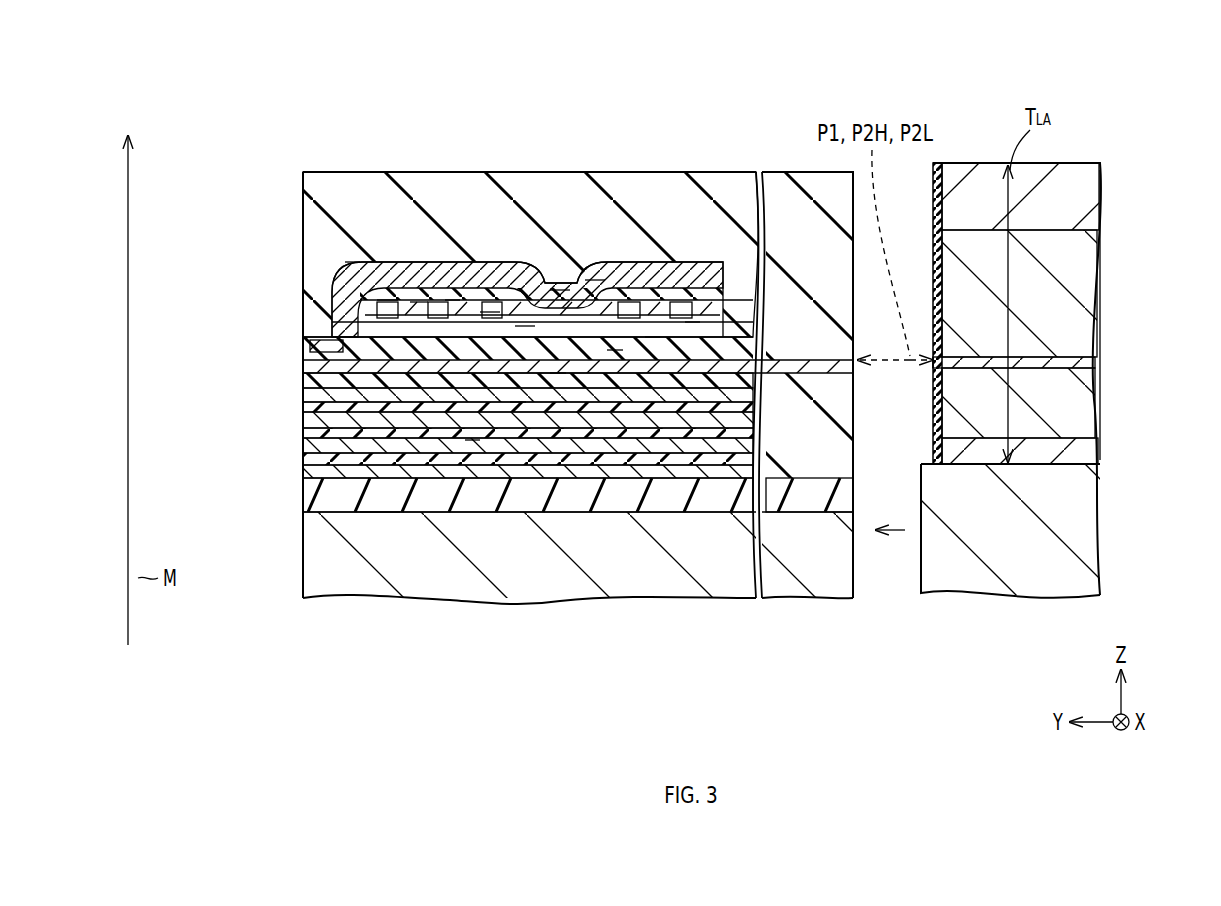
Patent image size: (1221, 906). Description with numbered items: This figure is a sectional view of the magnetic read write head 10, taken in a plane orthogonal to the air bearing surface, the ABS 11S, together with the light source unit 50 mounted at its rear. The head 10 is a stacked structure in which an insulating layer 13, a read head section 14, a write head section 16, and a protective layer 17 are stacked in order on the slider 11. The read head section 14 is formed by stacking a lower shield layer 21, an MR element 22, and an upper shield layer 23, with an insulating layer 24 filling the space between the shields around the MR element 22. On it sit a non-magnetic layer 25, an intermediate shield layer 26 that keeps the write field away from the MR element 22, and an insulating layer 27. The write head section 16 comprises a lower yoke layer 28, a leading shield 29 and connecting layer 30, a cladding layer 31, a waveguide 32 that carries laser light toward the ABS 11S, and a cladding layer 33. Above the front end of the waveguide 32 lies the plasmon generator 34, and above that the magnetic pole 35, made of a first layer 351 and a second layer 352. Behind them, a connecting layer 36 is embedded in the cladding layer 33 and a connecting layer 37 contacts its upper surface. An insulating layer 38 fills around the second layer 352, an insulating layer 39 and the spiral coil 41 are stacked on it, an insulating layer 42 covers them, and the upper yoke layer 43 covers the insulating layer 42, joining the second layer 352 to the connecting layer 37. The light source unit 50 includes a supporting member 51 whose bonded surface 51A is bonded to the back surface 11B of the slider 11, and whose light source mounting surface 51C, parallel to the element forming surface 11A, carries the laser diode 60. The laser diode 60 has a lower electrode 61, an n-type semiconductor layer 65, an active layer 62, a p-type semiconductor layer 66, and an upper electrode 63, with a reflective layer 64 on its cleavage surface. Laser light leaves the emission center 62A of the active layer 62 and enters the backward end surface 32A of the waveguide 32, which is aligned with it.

The magnetic read write head 10 is at (585, 328).
The light source unit 50 is at (1052, 323).
The slider 11 is at (578, 587).
The element forming surface 11A is at (372, 587).
The back surface 11B is at (874, 617).
The ABS 11S is at (285, 605).
The insulating layer 13 is at (697, 492).
The read head section 14 is at (257, 474).
The write head section 16 is at (231, 347).
The protective layer 17 is at (578, 299).
The lower shield layer 21 is at (552, 501).
The MR element 22 is at (502, 482).
The upper shield layer 23 is at (502, 455).
The insulating layer 24 is at (502, 429).
The non-magnetic layer 25 is at (480, 551).
The intermediate shield layer 26 is at (522, 532).
The insulating layer 27 is at (565, 517).
The lower yoke layer 28 is at (502, 405).
The leading shield 29 is at (502, 383).
The connecting layer 30 is at (526, 223).
The cladding layer 31 is at (618, 506).
The waveguide 32 is at (552, 359).
The backward end surface 32A is at (872, 331).
The cladding layer 33 is at (657, 499).
The plasmon generator 34 is at (502, 340).
The magnetic pole 35 is at (477, 299).
The first layer 351 is at (498, 305).
The second layer 352 is at (483, 299).
The connecting layer 36 is at (562, 205).
The connecting layer 37 is at (597, 200).
The insulating layer 38 is at (491, 216).
The insulating layer 39 is at (387, 210).
The coil 41 is at (420, 211).
The insulating layer 42 is at (456, 210).
The upper yoke layer 43 is at (352, 191).
The supporting member 51 is at (1035, 531).
The bonded surface 51A is at (901, 602).
The light source mounting surface 51C is at (918, 445).
The laser diode 60 is at (1147, 316).
The lower electrode 61 is at (1046, 454).
The active layer 62 is at (1041, 362).
The emission center 62A is at (912, 390).
The upper electrode 63 is at (1046, 196).
The reflective layer 64 is at (911, 313).
The n-type semiconductor layer 65 is at (1046, 403).
The p-type semiconductor layer 66 is at (1046, 293).